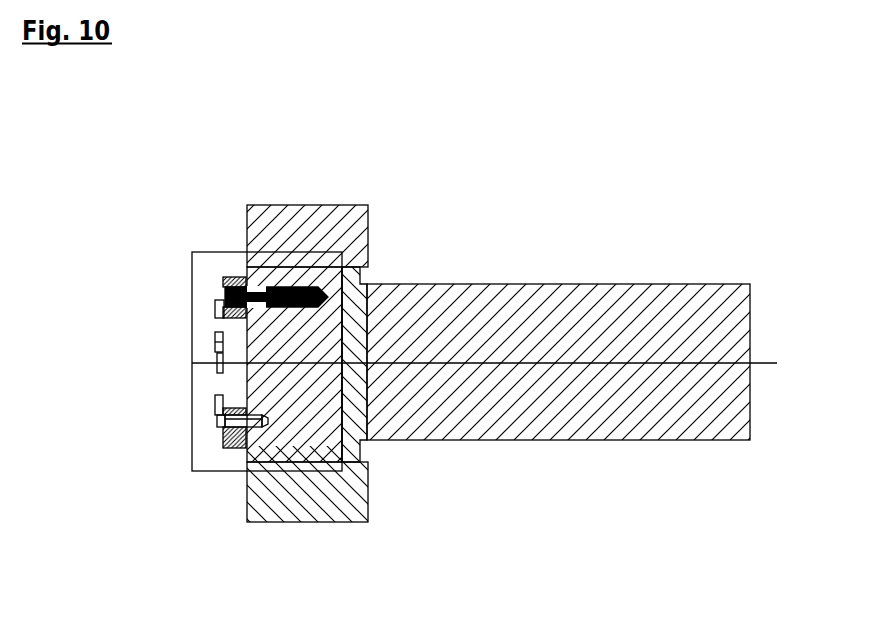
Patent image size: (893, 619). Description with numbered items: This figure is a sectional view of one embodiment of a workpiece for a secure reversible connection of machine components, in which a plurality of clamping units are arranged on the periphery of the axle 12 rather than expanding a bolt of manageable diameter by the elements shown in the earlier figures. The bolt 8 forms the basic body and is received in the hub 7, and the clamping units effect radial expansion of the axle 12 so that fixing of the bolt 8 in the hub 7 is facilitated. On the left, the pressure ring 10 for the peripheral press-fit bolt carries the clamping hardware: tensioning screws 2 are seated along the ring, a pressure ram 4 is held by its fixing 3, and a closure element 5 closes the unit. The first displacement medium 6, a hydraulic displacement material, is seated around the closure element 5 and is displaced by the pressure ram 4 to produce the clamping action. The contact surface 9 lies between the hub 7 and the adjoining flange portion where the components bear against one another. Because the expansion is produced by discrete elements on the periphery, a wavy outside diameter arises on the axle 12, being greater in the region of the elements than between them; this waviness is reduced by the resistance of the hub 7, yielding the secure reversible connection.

The tensioning screw 2 is at (212, 313).
The fixing of pressure ram 3 is at (223, 285).
The pressure ram 4 is at (217, 296).
The closure element 5 is at (248, 287).
The first displacement medium 6 is at (292, 287).
The hub 7 is at (313, 220).
The bolt 8 is at (413, 312).
The contact surface 9 is at (345, 461).
The pressure ring for peripheral press-fit bolt 10 is at (222, 279).
The axle with a number of clamping units 12 is at (192, 471).